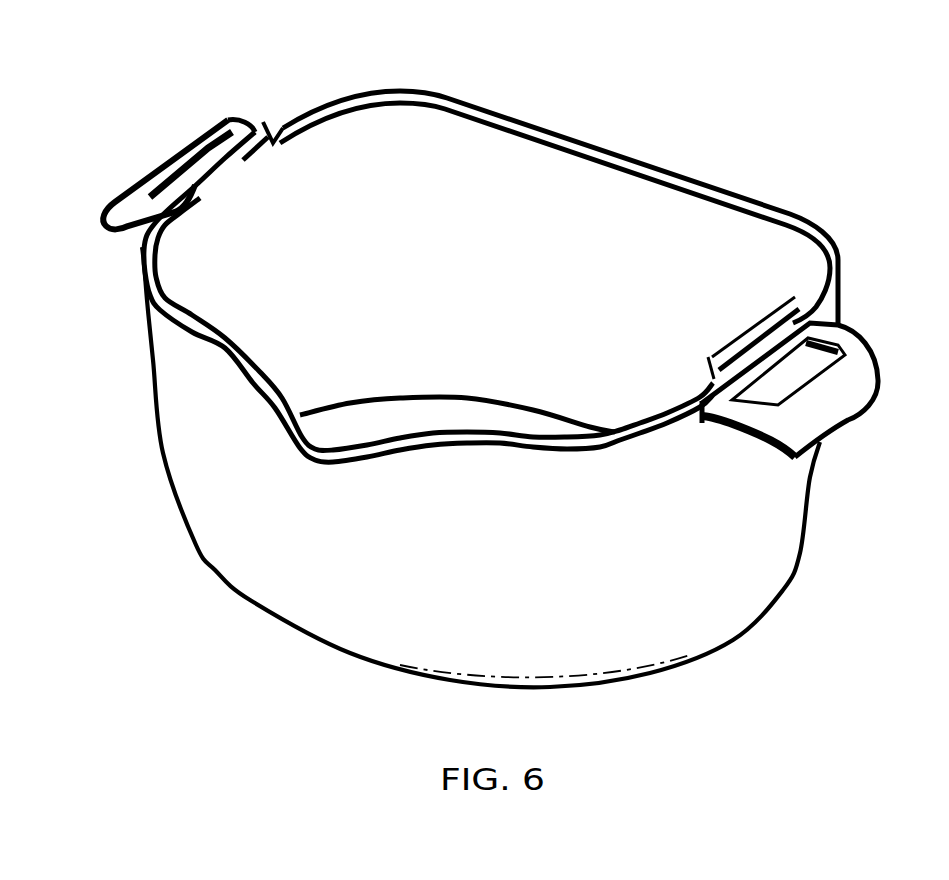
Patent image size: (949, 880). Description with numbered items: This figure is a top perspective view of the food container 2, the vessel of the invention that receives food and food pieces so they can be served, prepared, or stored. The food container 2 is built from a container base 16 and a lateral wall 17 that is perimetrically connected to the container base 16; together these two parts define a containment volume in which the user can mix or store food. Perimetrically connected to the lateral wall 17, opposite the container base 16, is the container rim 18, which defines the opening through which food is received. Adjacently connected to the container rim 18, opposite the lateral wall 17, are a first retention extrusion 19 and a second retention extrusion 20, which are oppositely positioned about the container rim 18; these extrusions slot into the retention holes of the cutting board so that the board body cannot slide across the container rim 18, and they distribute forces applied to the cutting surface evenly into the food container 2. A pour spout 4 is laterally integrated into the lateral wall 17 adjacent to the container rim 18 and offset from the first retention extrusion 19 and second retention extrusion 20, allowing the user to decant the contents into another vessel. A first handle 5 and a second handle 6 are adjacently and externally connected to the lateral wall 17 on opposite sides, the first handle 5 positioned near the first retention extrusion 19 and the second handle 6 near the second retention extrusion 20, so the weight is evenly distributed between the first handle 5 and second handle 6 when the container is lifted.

The food container 2 is at (678, 44).
The pour spout 4 is at (321, 463).
The first handle 5 is at (113, 203).
The second handle 6 is at (833, 398).
The container base 16 is at (410, 417).
The lateral wall 17 is at (163, 372).
The container rim 18 is at (828, 233).
The first retention extrusion 19 is at (274, 122).
The second retention extrusion 20 is at (773, 310).